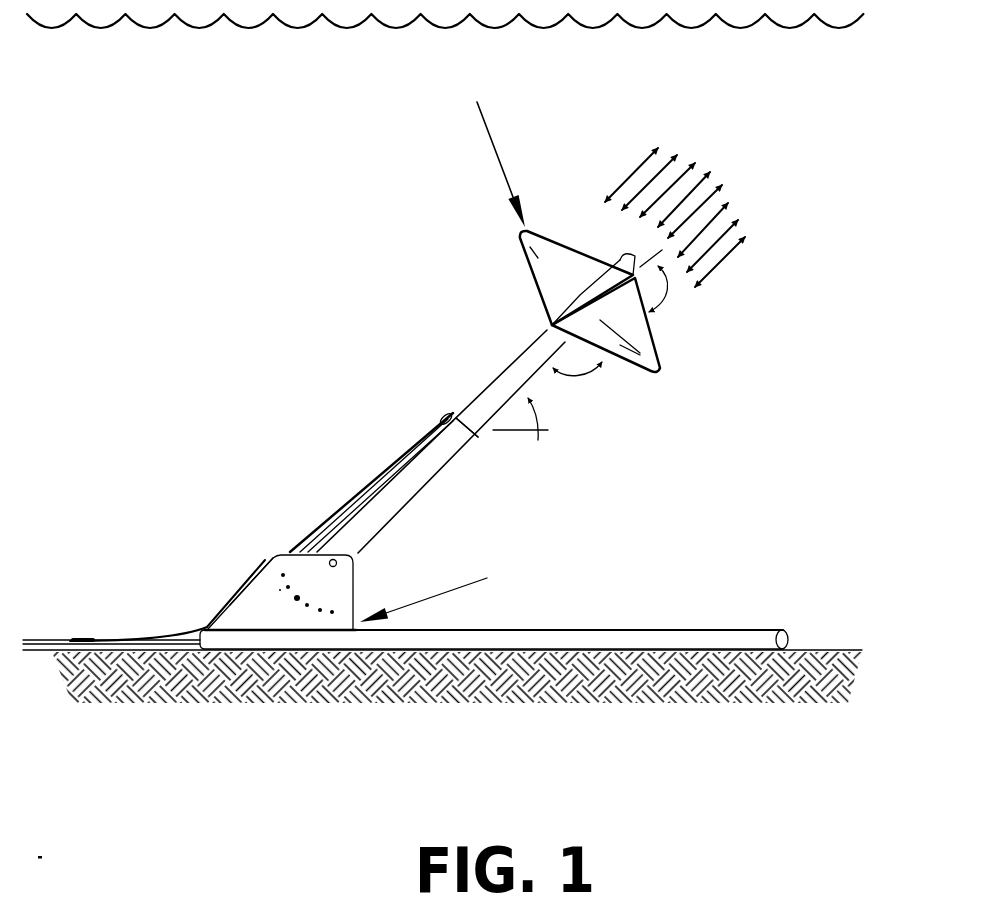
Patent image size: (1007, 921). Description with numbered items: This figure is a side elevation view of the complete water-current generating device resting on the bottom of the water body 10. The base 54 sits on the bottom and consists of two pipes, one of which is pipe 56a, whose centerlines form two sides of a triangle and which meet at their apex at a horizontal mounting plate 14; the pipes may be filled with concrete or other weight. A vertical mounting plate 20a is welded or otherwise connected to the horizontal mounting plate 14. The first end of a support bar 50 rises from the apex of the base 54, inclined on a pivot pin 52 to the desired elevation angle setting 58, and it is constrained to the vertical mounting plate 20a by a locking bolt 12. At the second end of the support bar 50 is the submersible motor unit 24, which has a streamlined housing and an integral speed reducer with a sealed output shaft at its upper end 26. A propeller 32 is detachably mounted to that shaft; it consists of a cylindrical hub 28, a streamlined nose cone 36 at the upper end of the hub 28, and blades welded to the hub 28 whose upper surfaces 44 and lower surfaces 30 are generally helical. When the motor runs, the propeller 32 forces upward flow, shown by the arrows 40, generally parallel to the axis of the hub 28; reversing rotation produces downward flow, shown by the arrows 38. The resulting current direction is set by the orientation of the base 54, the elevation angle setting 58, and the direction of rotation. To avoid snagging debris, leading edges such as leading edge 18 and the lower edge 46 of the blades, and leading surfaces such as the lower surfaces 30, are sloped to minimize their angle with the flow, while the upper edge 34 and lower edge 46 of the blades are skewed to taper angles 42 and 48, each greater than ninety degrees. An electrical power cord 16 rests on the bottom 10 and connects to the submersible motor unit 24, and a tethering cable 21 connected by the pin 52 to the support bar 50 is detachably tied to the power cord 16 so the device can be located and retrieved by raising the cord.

The bottom of the water body 10 is at (803, 648).
The locking bolt 12 is at (297, 605).
The horizontal mounting plate 14 is at (258, 632).
The electrical power cord 16 is at (38, 643).
The leading edge 18 is at (238, 585).
The vertical mounting plate 20a is at (252, 580).
The tethering cable 21 is at (345, 505).
The submersible motor unit 24 is at (503, 383).
The upper end 26 is at (550, 323).
The cylindrical hub 28 is at (540, 313).
The lower surfaces of propeller blades 30 is at (520, 237).
The propeller 32 is at (489, 150).
The upper edge of propeller blades 34 is at (655, 335).
The streamlined nose cone 36 is at (617, 247).
The arrows depicting downward water flow 38 is at (606, 195).
The arrows depicting upward water flow 40 is at (725, 200).
The taper angle 42 is at (663, 295).
The upper surfaces of propeller blades 44 is at (640, 353).
The lower edge of propeller blades 46 is at (632, 370).
The taper angle 48 is at (580, 377).
The support bar 50 is at (455, 458).
The pivot pin 52 is at (340, 562).
The base 54 is at (443, 590).
The pipe 56a is at (577, 628).
The elevation angle setting 58 is at (526, 437).